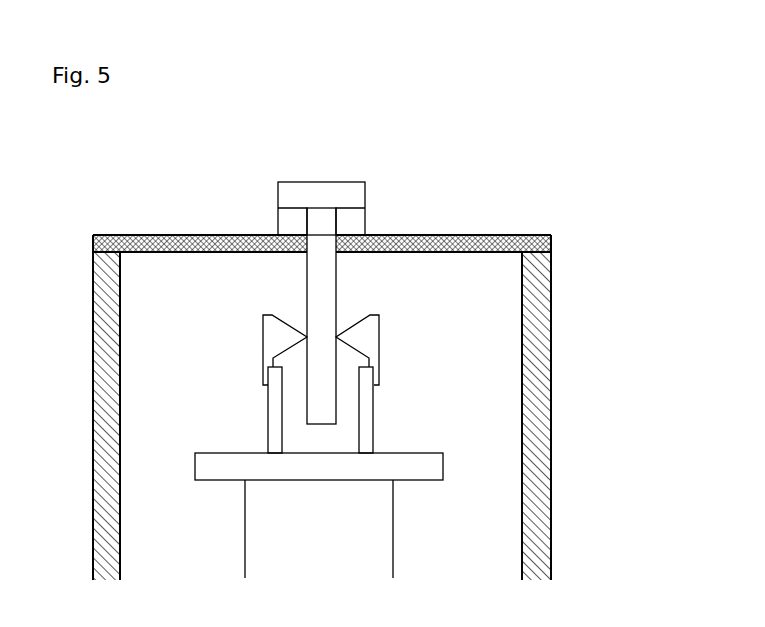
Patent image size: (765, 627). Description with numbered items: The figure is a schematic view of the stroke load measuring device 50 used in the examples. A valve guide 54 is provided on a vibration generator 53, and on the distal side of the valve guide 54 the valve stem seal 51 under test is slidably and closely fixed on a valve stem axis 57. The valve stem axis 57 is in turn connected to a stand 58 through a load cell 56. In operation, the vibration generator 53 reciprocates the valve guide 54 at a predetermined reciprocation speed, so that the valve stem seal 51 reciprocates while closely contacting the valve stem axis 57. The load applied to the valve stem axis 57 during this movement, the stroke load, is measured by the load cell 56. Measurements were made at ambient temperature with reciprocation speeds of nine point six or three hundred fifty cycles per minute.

The stroke load measuring device 50 is at (344, 360).
The valve stem seal 51 is at (367, 322).
The vibration generator 53 is at (452, 455).
The valve guide 54 is at (373, 412).
The load cell 56 is at (290, 220).
The valve stem axis 57 is at (286, 178).
The stand 58 is at (126, 242).